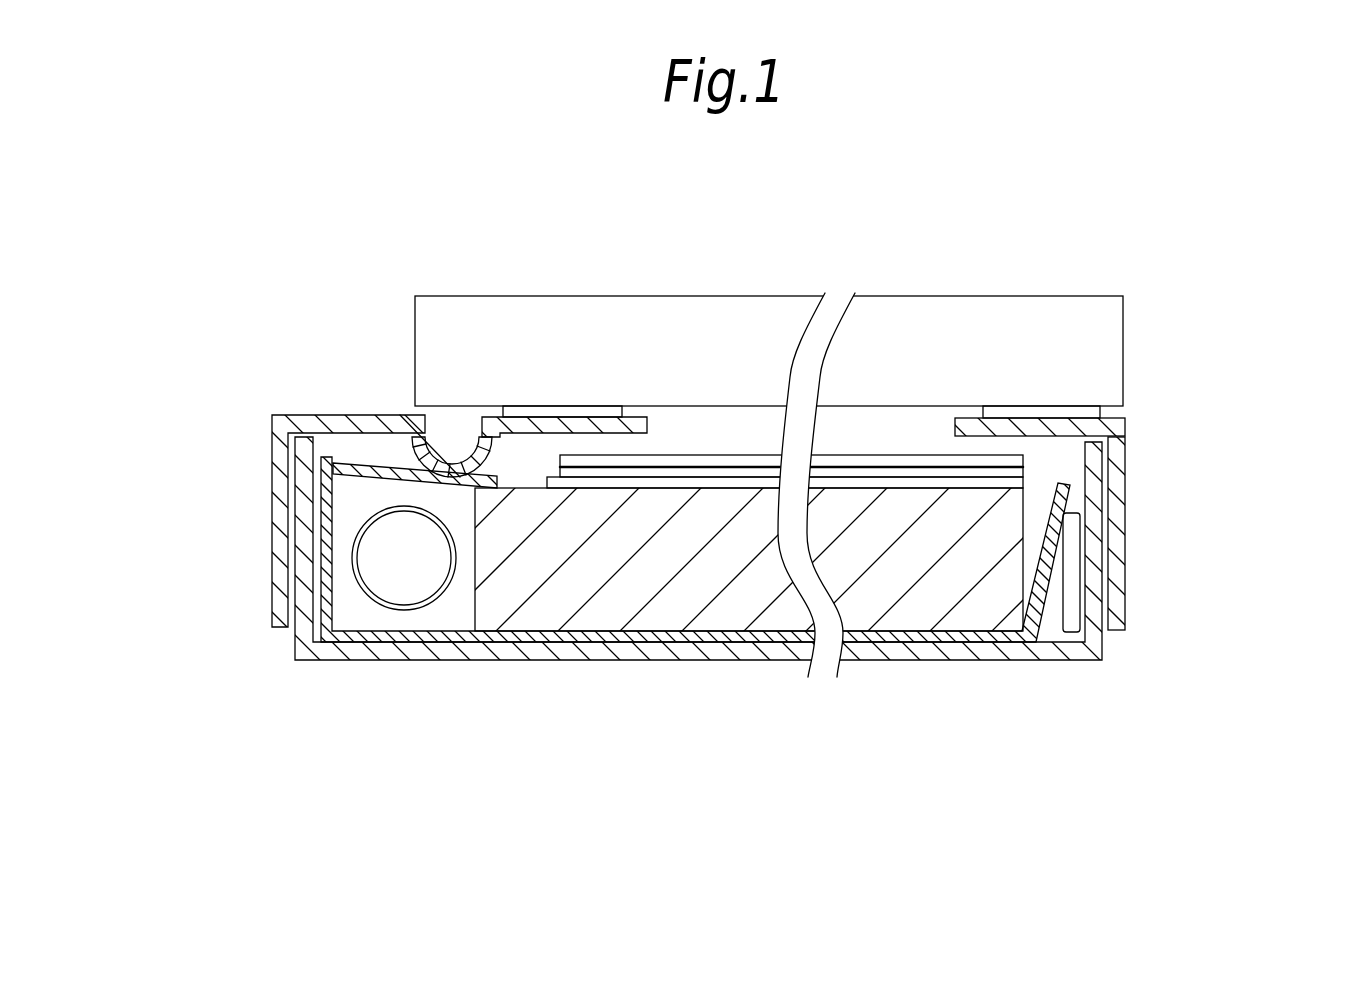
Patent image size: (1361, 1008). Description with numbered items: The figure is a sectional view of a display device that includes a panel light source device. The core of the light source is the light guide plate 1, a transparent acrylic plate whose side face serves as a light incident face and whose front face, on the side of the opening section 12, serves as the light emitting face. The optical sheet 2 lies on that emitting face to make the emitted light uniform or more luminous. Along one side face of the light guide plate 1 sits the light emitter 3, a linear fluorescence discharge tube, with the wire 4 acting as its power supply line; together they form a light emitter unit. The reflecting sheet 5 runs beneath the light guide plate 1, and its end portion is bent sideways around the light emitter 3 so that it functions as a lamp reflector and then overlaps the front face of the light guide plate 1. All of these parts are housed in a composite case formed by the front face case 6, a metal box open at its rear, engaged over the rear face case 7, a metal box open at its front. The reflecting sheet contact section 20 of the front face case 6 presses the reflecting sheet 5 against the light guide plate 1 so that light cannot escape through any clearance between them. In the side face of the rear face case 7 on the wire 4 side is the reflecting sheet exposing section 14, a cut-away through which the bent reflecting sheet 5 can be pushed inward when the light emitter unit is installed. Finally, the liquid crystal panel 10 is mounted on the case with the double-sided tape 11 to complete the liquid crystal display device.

The light guide plate 1 is at (653, 610).
The optical sheet 2 is at (1025, 468).
The light emitter 3 is at (410, 587).
The wire 4 is at (1070, 603).
The reflecting sheet 5 is at (378, 465).
The front face case 6 is at (278, 467).
The rear face case 7 is at (1087, 660).
The liquid crystal panel 10 is at (1012, 317).
The double-sided tape 11 is at (582, 410).
The opening section 12 is at (755, 425).
The reflecting sheet exposing section 14 is at (1100, 472).
The reflecting sheet contact section 20 is at (428, 449).